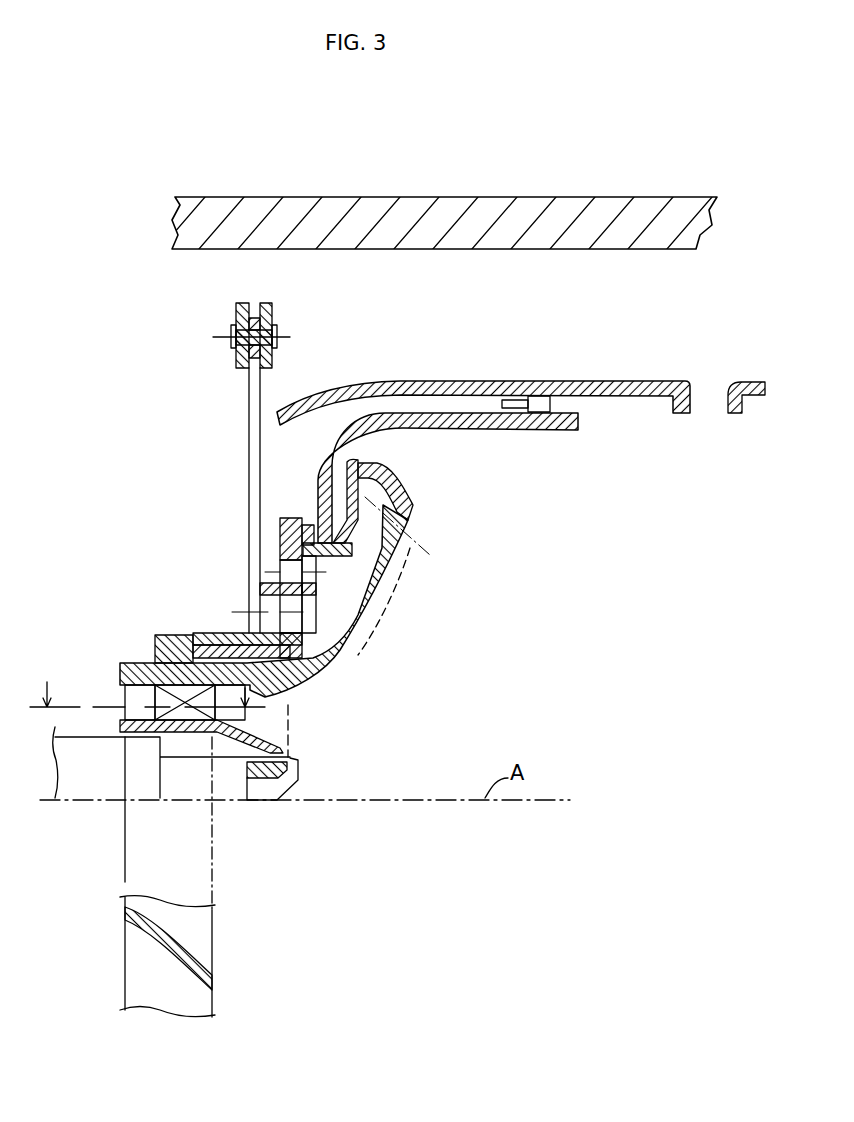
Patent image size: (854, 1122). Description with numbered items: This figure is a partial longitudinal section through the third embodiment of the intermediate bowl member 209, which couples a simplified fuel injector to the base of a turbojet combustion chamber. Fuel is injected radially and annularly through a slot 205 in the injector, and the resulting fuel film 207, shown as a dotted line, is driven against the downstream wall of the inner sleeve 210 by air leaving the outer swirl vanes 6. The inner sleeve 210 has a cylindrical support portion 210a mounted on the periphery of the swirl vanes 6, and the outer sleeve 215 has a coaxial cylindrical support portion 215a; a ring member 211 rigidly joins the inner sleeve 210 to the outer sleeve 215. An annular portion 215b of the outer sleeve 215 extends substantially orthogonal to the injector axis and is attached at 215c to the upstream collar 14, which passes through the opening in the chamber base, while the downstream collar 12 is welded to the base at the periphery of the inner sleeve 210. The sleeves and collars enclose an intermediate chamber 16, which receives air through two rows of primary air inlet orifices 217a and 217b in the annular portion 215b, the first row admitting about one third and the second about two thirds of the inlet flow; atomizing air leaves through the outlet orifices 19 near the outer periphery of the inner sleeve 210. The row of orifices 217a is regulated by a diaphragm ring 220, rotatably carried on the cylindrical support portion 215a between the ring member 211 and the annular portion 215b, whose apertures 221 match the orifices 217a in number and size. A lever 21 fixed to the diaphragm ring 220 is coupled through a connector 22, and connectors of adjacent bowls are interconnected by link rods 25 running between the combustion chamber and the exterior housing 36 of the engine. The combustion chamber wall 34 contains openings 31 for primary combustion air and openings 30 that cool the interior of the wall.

The exterior housing 36 is at (318, 249).
The connector 22 is at (237, 310).
The link rods 25 is at (248, 343).
The lever 21 is at (250, 415).
The combustion chamber wall 34 is at (636, 381).
The openings 30 is at (538, 400).
The openings 31 is at (707, 397).
The downstream collar 12 is at (356, 460).
The atomizing air outlet orifices 19 is at (410, 522).
The upstream collar 14 is at (318, 556).
The attachment point 215c is at (304, 524).
The annular portion 215b is at (281, 540).
The outer sleeve 215 is at (292, 622).
The primary air inlet orifices 217b is at (298, 573).
The apertures 221 is at (268, 610).
The diaphragm ring 220 is at (236, 640).
The cylindrical support portion 215a is at (198, 636).
The primary air inlet orifices 217a is at (333, 640).
The ring member 211 is at (155, 637).
The inner sleeve 210 is at (343, 650).
The cylindrical support portion 210a is at (150, 663).
The intermediate chamber 16 is at (290, 650).
The intermediate bowl member 209 is at (404, 610).
The outer swirl vanes 6 is at (168, 700).
The slot 205 is at (298, 765).
The fuel film 207 is at (292, 702).